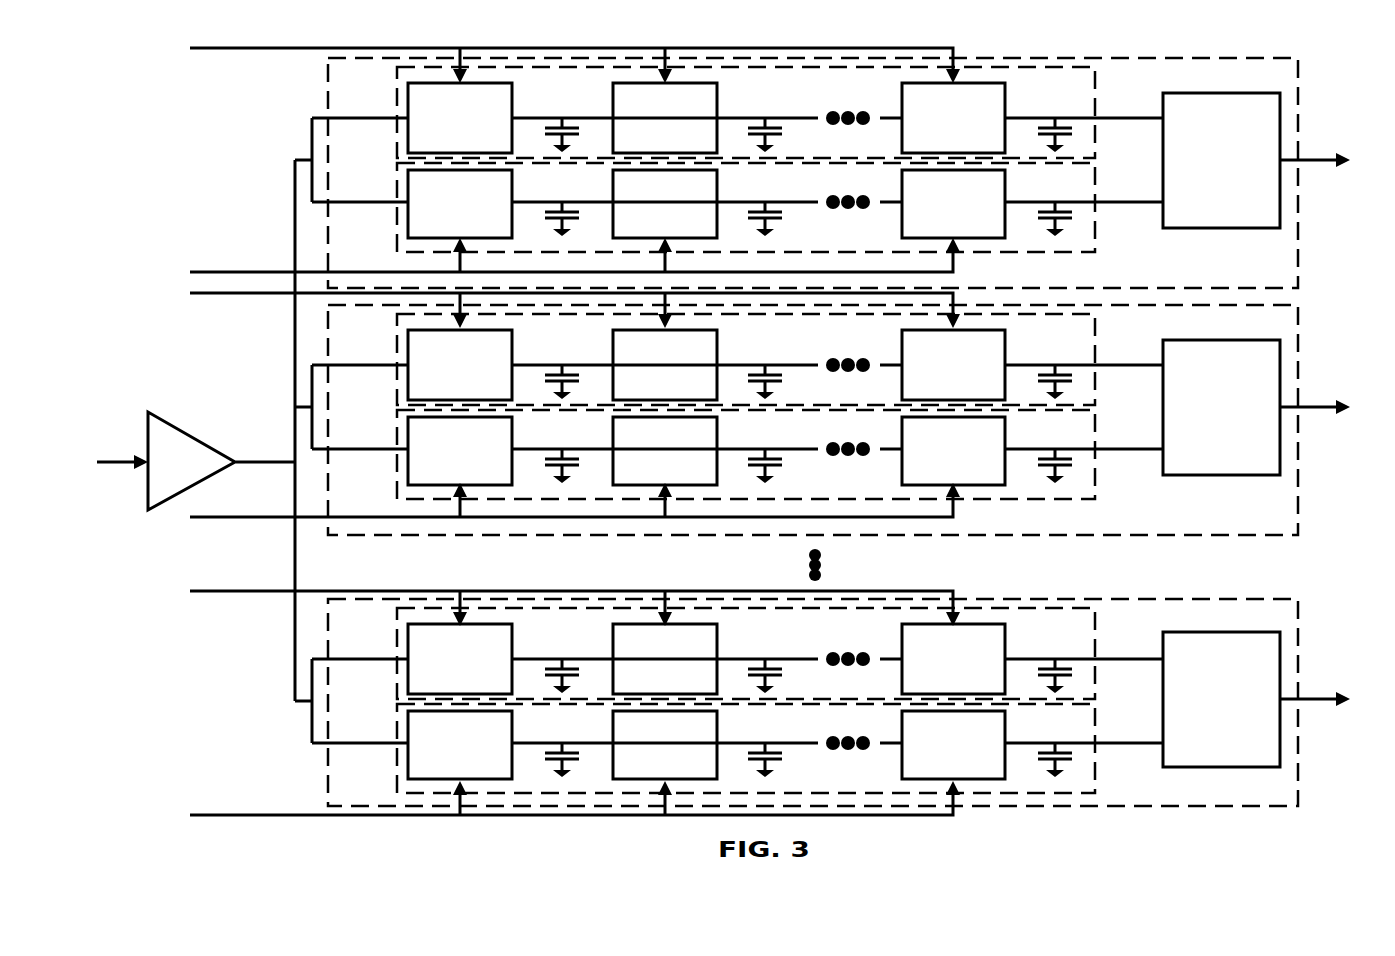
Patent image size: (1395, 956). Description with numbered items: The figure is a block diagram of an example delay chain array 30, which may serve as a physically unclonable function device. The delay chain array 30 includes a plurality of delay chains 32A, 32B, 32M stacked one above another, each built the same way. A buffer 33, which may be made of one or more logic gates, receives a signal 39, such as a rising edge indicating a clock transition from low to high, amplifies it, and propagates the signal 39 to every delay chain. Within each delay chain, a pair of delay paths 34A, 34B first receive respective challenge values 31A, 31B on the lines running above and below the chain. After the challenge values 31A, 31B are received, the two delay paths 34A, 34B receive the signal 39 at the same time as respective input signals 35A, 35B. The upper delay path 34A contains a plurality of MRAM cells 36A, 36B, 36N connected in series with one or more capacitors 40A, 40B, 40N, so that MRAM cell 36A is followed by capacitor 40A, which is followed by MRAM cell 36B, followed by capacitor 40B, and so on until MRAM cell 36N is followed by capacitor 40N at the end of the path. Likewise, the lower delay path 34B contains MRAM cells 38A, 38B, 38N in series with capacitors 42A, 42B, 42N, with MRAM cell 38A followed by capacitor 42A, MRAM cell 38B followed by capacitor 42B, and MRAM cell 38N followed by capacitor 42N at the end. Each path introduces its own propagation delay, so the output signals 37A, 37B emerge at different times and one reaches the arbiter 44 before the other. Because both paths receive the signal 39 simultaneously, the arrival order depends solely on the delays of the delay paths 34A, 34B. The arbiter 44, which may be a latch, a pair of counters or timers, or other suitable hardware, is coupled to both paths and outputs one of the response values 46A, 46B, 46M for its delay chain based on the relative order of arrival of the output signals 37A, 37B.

The delay chain array 30 is at (186, 118).
The challenge value 31A is at (207, 47).
The challenge value 31B is at (207, 271).
The delay chain 32A is at (1299, 90).
The delay chain 32B is at (1299, 337).
The delay chain 32M is at (1299, 631).
The buffer 33 is at (191, 432).
The delay path 34A is at (397, 102).
The delay path 34B is at (397, 190).
The input signal 35A is at (313, 120).
The input signal 35B is at (313, 205).
The MRAM cell 36A is at (440, 141).
The MRAM cell 36B is at (645, 141).
The MRAM cell 36N is at (933, 141).
The output signal 37A is at (1154, 116).
The output signal 37B is at (1154, 201).
The MRAM cell 38A is at (440, 228).
The MRAM cell 38B is at (645, 228).
The MRAM cell 38N is at (933, 228).
The signal 39 is at (125, 457).
The capacitor 40A is at (557, 116).
The capacitor 40B is at (760, 116).
The capacitor 40N is at (1057, 98).
The capacitor 42A is at (557, 200).
The capacitor 42B is at (760, 200).
The capacitor 42N is at (1057, 183).
The arbiter 44 is at (1209, 186).
The response value 46A is at (1300, 158).
The response value 46B is at (1325, 393).
The response value 46M is at (1325, 685).